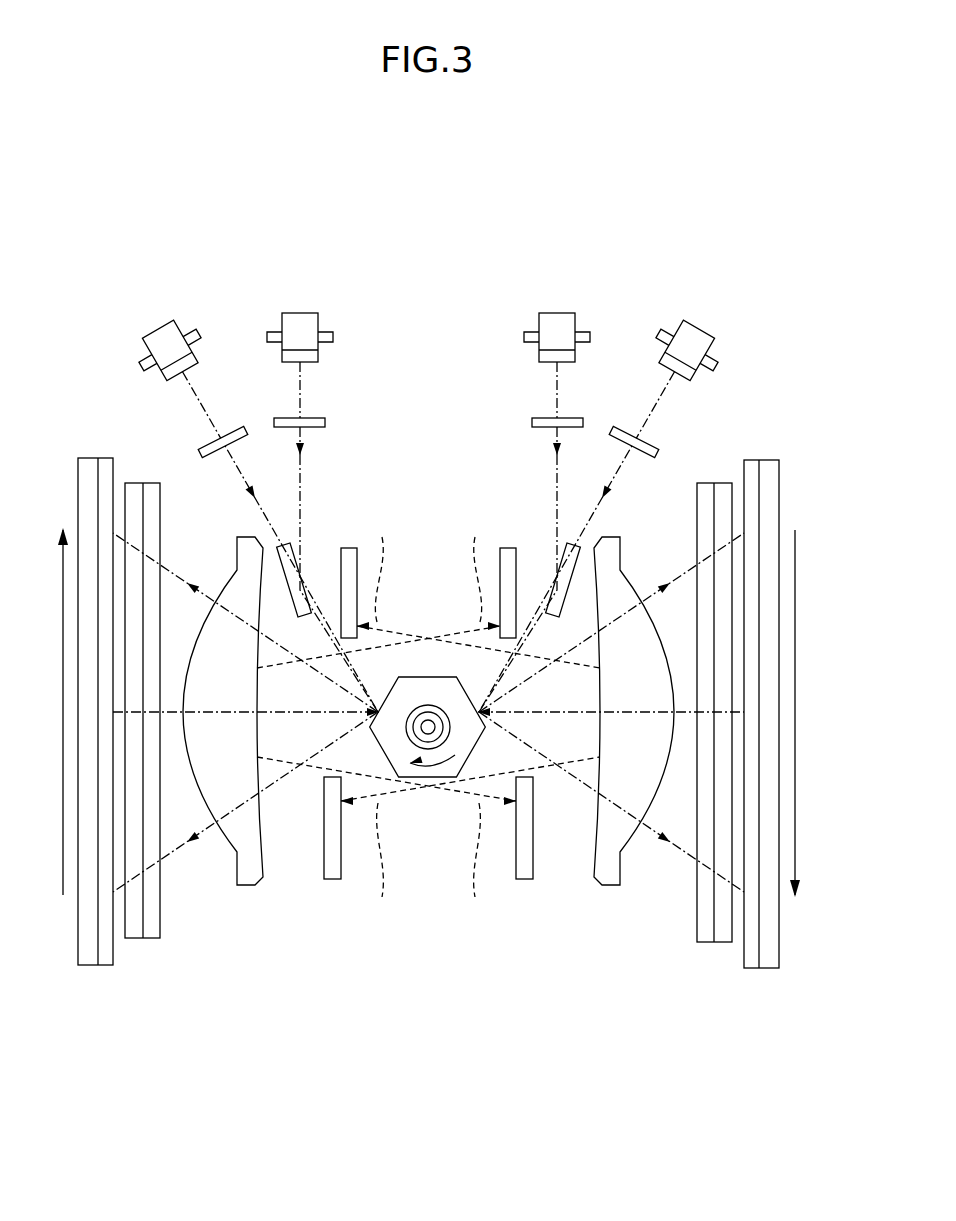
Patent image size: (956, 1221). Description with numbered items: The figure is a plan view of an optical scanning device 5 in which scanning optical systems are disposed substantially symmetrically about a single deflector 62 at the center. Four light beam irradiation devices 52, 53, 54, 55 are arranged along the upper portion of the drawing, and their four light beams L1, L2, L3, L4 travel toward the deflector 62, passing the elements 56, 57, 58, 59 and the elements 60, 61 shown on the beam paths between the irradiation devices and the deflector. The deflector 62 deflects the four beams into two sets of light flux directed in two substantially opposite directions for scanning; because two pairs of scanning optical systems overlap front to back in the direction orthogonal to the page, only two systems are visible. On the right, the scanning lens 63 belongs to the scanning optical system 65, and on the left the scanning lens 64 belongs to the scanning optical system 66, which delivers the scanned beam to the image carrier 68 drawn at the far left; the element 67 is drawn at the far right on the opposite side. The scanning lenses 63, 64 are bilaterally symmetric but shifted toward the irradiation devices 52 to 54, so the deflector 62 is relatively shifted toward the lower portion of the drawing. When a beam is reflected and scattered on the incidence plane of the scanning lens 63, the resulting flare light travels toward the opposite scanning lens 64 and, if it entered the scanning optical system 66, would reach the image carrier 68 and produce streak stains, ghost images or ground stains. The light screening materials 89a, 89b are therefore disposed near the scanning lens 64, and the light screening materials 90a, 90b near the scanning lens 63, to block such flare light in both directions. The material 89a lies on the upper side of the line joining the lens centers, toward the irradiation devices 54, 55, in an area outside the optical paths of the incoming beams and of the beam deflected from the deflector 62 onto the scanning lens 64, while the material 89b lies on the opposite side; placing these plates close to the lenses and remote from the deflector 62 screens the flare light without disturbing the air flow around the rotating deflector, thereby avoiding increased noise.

The optical scanning device 5 is at (117, 220).
The light beam irradiation device 52 is at (695, 340).
The light beam irradiation device 53 is at (559, 322).
The light beam irradiation device 54 is at (298, 322).
The light beam irradiation device 55 is at (162, 340).
The coupling lens 56 is at (652, 450).
The coupling lens 57 is at (557, 419).
The coupling lens 58 is at (300, 419).
The coupling lens 59 is at (205, 450).
The cylindrical lens 60 is at (561, 582).
The cylindrical lens 61 is at (296, 582).
The deflector 62 is at (473, 748).
The scanning lens 63 is at (609, 876).
The scanning lens 64 is at (248, 876).
The scanning optical system 65 is at (720, 944).
The scanning optical system 66 is at (137, 940).
The folding mirror / scanned surface 67 is at (765, 970).
The image carrier 68 is at (90, 967).
The light screening material 89a is at (340, 565).
The light screening material 89b is at (324, 863).
The light screening material 90a is at (517, 565).
The light screening material 90b is at (533, 863).
The light beam L1 is at (555, 468).
The light beam L2 is at (619, 486).
The light beam L3 is at (238, 486).
The light beam L4 is at (302, 468).